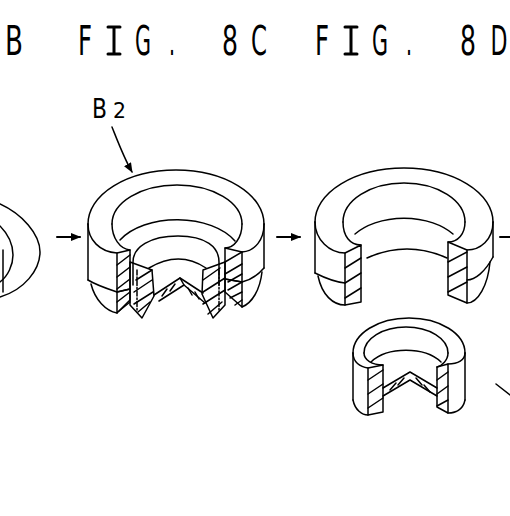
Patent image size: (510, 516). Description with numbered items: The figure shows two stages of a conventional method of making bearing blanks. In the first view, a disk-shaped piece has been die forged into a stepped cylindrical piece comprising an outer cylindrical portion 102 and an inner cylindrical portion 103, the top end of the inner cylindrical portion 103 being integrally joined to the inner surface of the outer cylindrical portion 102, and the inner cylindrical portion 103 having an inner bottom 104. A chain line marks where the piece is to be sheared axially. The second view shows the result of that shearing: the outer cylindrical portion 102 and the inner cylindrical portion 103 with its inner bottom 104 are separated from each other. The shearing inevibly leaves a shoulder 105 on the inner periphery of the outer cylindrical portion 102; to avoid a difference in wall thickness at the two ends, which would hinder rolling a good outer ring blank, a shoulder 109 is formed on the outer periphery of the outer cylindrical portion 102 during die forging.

In FIG. 8C, the outer cylindrical portion 102 is at (90, 273).
In FIG. 8D, the outer cylindrical portion 102 is at (335, 184).
In FIG. 8C, the inner cylindrical portion 103 is at (146, 312).
In FIG. 8D, the inner cylindrical portion 103 is at (352, 387).
In FIG. 8C, the inner bottom 104 is at (184, 288).
In FIG. 8D, the inner bottom 104 is at (407, 383).
In FIG. 8D, the shoulder 105 is at (405, 198).
In FIG. 8C, the shoulder 109 is at (250, 303).
In FIG. 8D, the shoulder 109 is at (404, 277).